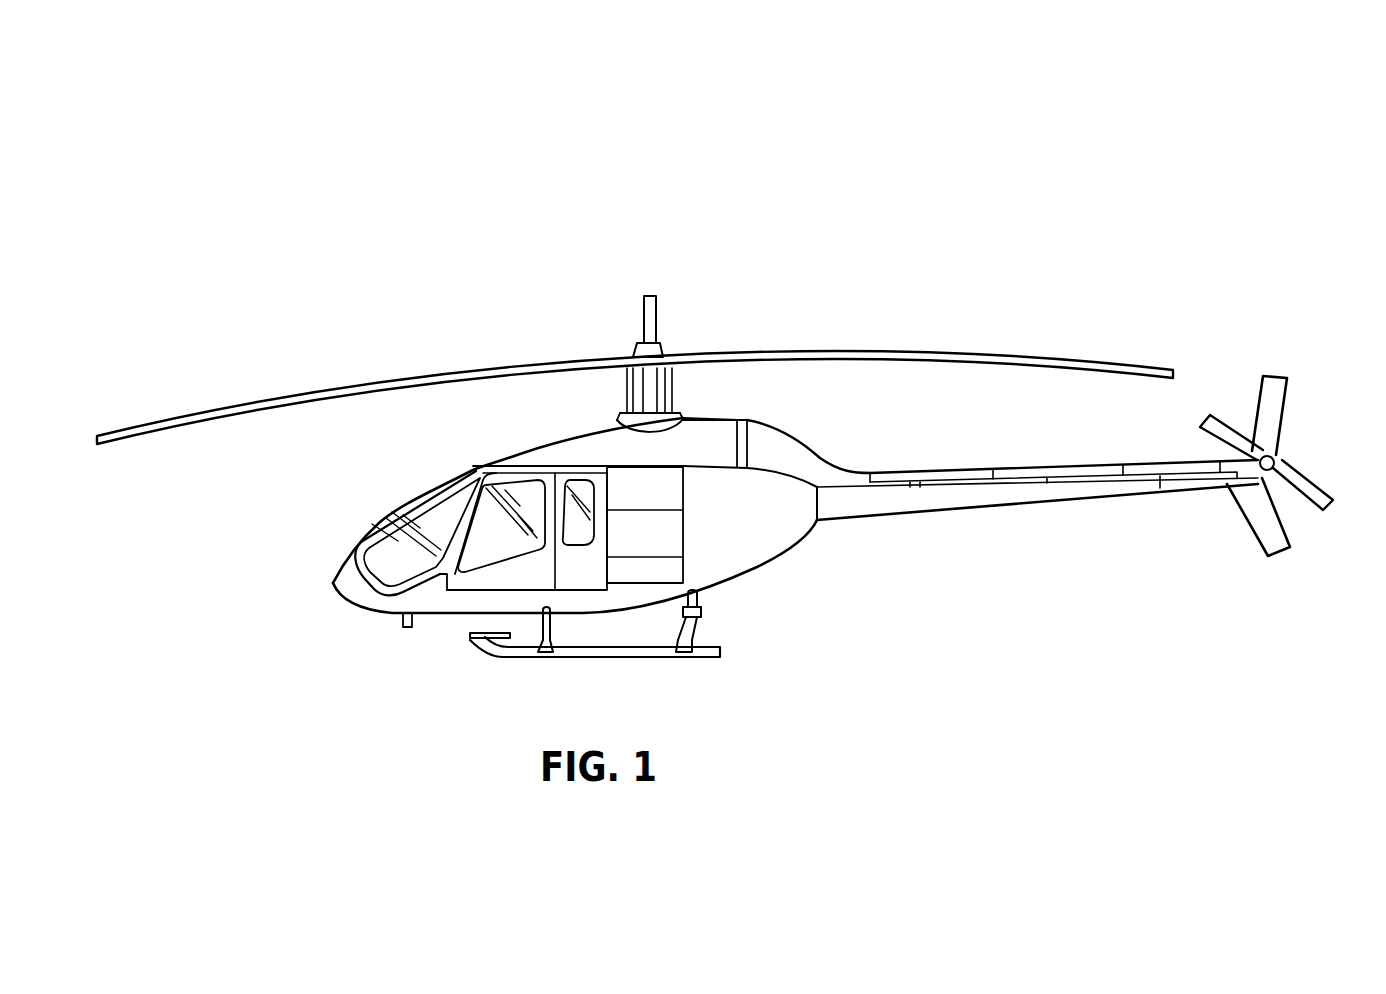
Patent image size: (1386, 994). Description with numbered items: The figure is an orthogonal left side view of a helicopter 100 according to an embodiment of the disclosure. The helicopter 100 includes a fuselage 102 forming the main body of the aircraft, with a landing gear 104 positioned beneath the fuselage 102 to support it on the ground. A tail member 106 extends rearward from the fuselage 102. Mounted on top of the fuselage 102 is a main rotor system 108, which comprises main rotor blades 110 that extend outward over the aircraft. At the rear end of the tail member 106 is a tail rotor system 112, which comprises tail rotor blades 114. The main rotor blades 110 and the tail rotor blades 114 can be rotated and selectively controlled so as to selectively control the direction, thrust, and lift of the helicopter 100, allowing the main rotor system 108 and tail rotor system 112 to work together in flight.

The helicopter 100 is at (472, 148).
The fuselage 102 is at (730, 549).
The landing gear 104 is at (583, 660).
The tail member 106 is at (1097, 497).
The main rotor system 108 is at (620, 324).
The main rotor blades 110 is at (303, 388).
The tail rotor system 112 is at (1285, 447).
The tail rotor blades 114 is at (1224, 417).